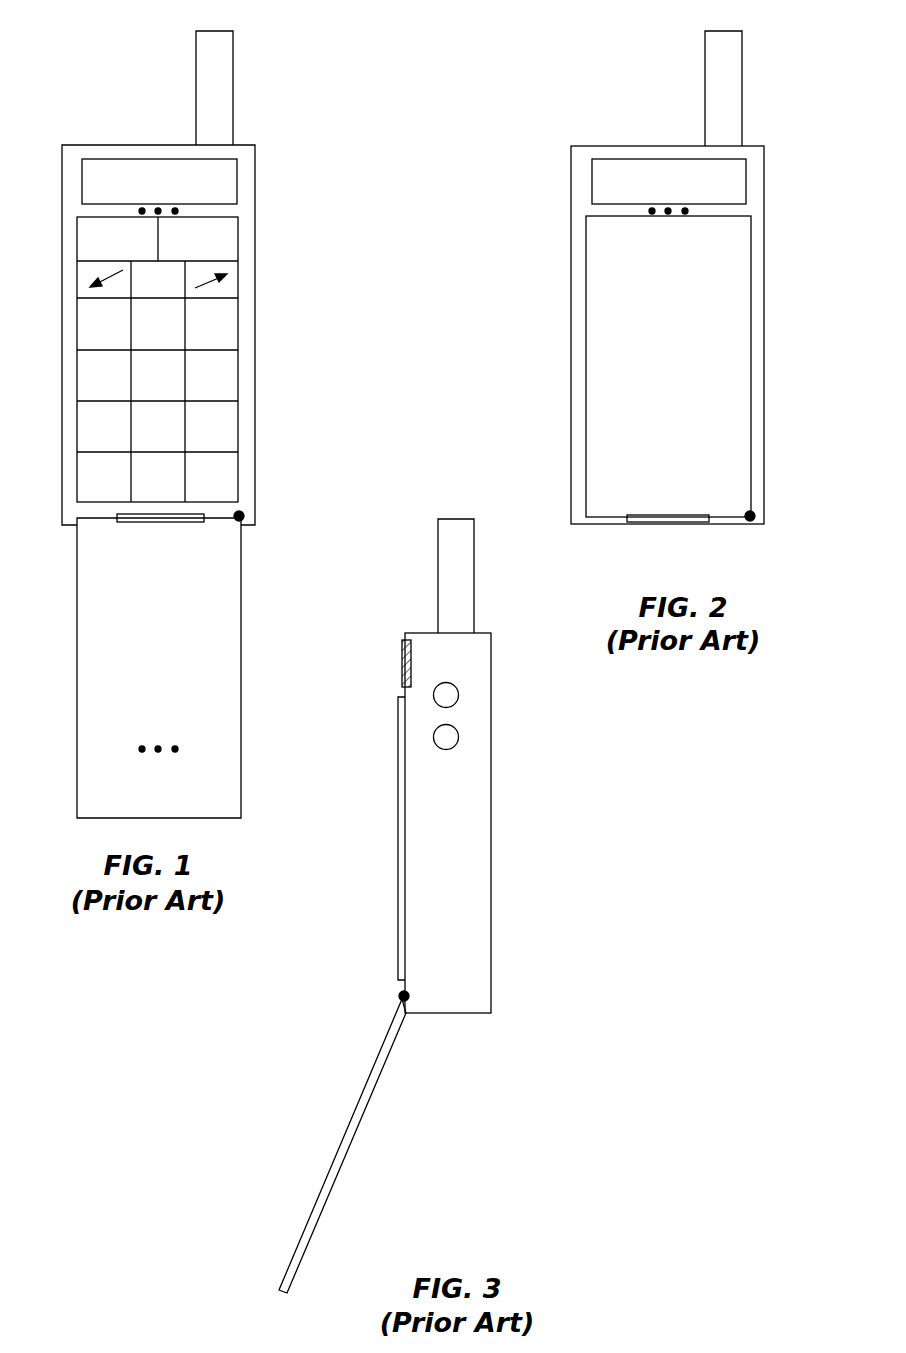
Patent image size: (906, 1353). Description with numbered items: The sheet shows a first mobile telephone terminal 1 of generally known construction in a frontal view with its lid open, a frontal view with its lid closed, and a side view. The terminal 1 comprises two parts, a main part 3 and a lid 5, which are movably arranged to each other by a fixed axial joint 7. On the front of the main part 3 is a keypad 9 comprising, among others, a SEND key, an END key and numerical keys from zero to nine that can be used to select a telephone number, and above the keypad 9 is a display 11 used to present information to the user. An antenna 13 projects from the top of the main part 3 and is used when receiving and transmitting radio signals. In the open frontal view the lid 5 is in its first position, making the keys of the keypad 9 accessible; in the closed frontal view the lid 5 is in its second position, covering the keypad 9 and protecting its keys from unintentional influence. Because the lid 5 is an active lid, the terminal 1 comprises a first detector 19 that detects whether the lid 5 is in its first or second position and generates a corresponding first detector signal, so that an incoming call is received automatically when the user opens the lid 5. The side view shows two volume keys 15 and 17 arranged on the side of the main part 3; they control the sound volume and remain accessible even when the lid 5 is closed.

In FIG. 1, the first mobile telephone terminal 1 is at (127, 105).
In FIG. 2, the first mobile telephone terminal 1 is at (655, 113).
In FIG. 3, the first mobile telephone terminal 1 is at (411, 600).
In FIG. 1, the main part 3 is at (255, 150).
In FIG. 2, the main part 3 is at (764, 153).
In FIG. 3, the main part 3 is at (482, 922).
In FIG. 1, the lid 5 is at (233, 728).
In FIG. 2, the lid 5 is at (751, 400).
In FIG. 3, the lid 5 is at (320, 1188).
In FIG. 1, the fixed axial joint 7 is at (155, 523).
In FIG. 2, the fixed axial joint 7 is at (677, 522).
In FIG. 1, the keypad 9 is at (240, 354).
In FIG. 3, the keypad 9 is at (403, 888).
In FIG. 1, the display 11 is at (233, 180).
In FIG. 2, the display 11 is at (742, 183).
In FIG. 3, the display 11 is at (400, 665).
In FIG. 1, the antenna 13 is at (233, 51).
In FIG. 2, the antenna 13 is at (742, 52).
In FIG. 3, the antenna 13 is at (468, 538).
In FIG. 3, the volume key 15 is at (447, 695).
In FIG. 3, the volume key 17 is at (447, 737).
In FIG. 1, the first detector 19 is at (244, 517).
In FIG. 2, the first detector 19 is at (755, 518).
In FIG. 3, the first detector 19 is at (398, 993).